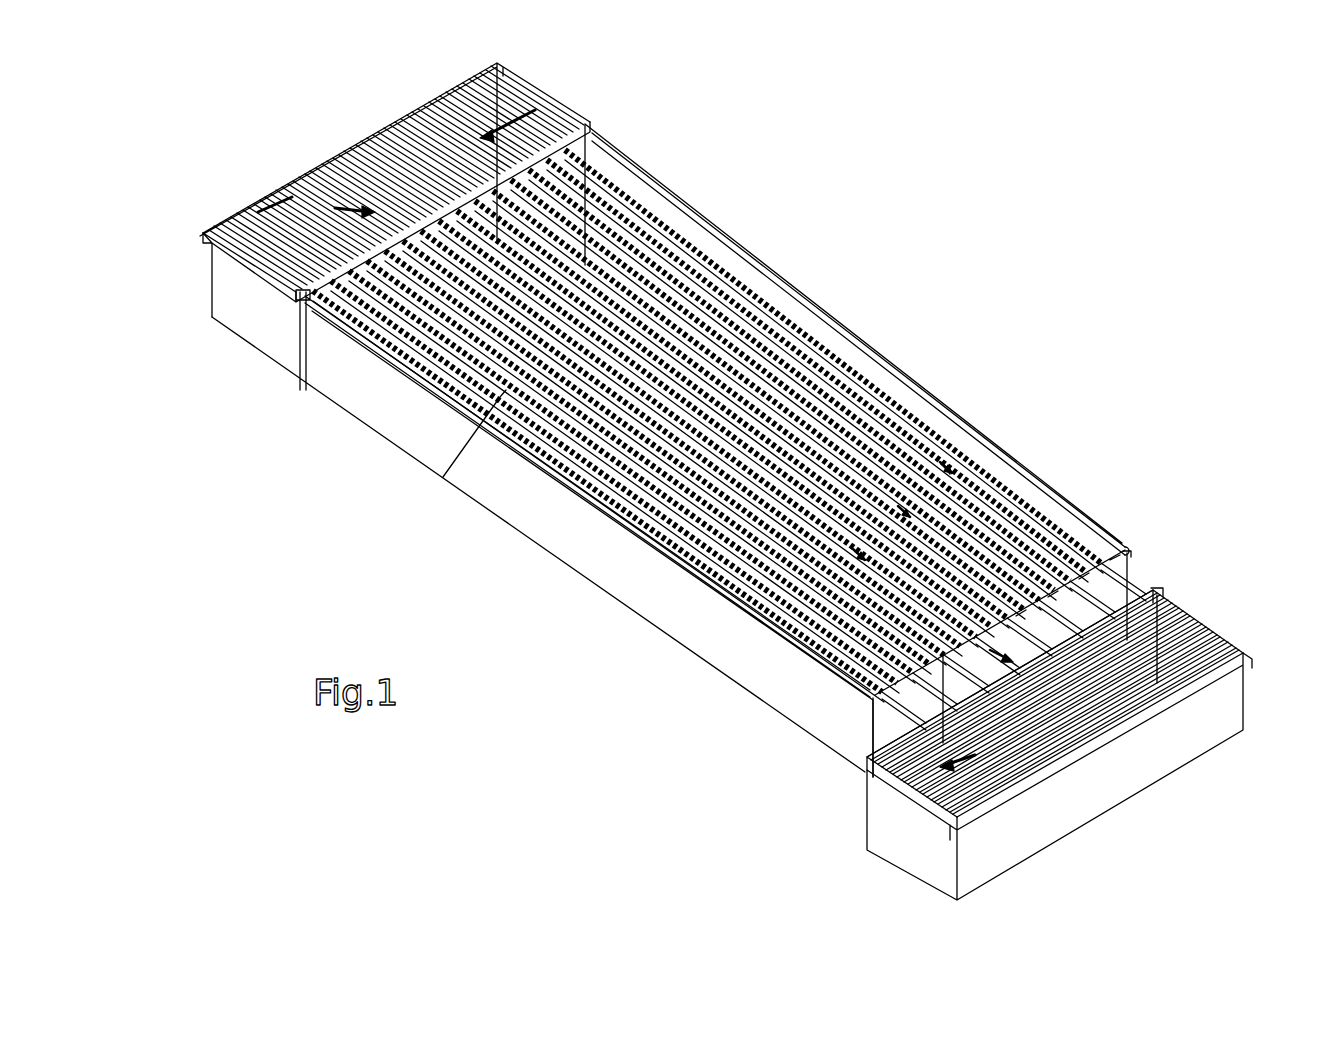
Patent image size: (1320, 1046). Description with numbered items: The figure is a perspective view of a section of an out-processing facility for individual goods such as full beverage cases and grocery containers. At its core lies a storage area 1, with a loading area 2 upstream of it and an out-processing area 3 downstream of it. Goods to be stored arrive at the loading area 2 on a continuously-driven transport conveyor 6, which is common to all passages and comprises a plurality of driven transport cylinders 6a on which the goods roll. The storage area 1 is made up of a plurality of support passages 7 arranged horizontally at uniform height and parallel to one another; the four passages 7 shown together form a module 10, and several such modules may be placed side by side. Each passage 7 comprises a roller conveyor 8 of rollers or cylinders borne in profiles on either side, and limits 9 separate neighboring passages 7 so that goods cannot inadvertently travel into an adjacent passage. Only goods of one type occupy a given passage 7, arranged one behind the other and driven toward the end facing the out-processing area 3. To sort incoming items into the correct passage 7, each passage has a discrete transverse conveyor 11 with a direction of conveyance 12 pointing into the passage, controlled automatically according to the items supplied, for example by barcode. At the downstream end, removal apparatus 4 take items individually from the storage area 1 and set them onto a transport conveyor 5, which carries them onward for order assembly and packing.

The storage area 1 is at (843, 326).
The loading area 2 is at (602, 109).
The out-processing area 3 is at (1165, 578).
The removal apparatus 4 is at (1127, 577).
The transport conveyor 5 is at (1205, 650).
The transport conveyor 6 is at (262, 263).
The transport cylinders 6a is at (553, 107).
The support passages 7 is at (965, 445).
The roller conveyors 8 is at (443, 477).
The limits 9 is at (712, 260).
The module 10 is at (553, 527).
The transverse conveyor 11 is at (337, 153).
The direction of conveyance 12 is at (287, 187).